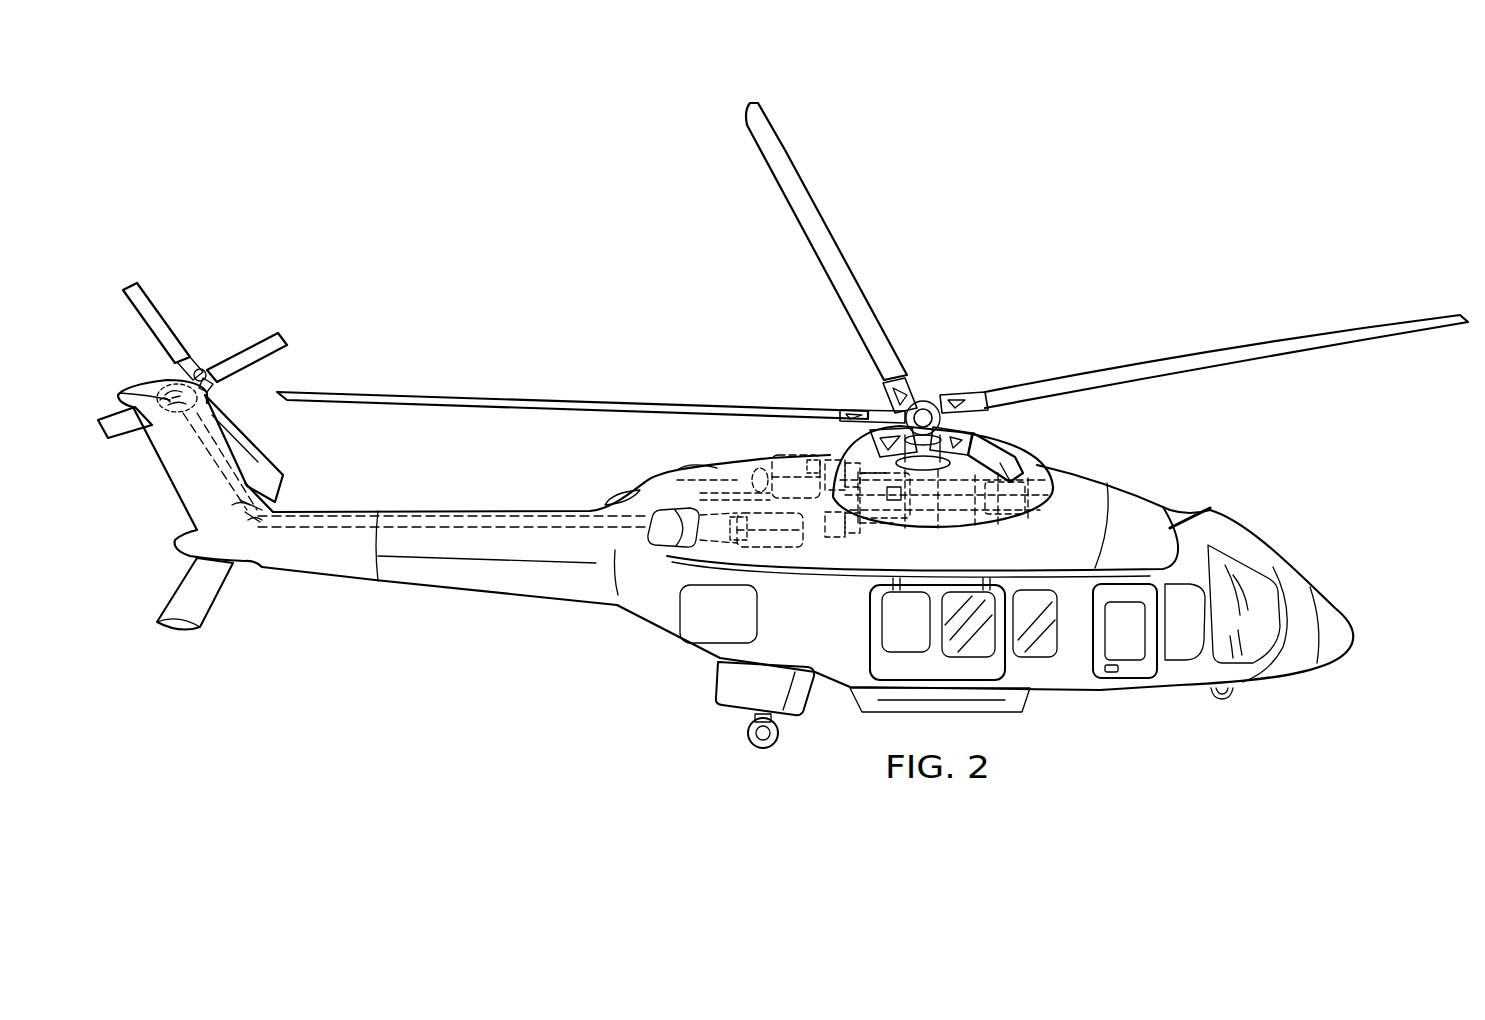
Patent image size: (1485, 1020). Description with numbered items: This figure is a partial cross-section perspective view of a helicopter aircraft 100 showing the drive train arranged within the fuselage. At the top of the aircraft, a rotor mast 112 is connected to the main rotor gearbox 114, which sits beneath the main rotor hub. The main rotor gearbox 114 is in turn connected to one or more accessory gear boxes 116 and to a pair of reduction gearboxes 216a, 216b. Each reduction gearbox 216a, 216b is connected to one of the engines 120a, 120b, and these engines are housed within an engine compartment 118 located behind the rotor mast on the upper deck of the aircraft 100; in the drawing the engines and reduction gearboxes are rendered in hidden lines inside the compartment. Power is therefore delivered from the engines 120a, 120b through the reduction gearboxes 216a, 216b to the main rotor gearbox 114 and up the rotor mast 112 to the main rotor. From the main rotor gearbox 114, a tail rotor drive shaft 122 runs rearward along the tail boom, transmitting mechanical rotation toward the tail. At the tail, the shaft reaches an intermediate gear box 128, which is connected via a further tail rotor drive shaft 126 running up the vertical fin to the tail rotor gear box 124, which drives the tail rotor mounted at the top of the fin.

The aircraft 100 is at (1156, 146).
The rotor mast 112 is at (873, 537).
The main rotor gearbox 114 is at (927, 517).
The accessory gear box 116 is at (1007, 520).
The engine compartment 118 is at (799, 448).
The engine 120a is at (768, 537).
The engine 120b is at (773, 457).
The reduction gearbox 216a is at (827, 540).
The reduction gearbox 216b is at (826, 454).
The tail rotor drive shaft 122 is at (467, 517).
The tail rotor gear box 124 is at (157, 375).
The tail rotor drive shaft 126 is at (233, 460).
The intermediate gear box 128 is at (247, 537).